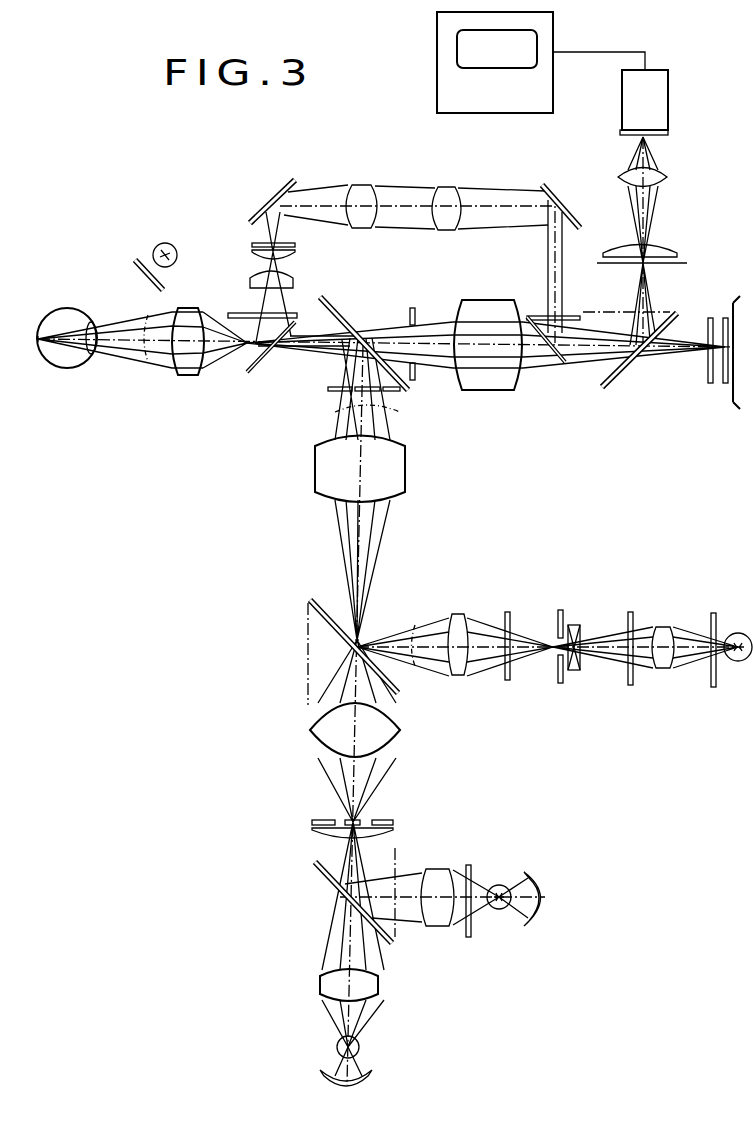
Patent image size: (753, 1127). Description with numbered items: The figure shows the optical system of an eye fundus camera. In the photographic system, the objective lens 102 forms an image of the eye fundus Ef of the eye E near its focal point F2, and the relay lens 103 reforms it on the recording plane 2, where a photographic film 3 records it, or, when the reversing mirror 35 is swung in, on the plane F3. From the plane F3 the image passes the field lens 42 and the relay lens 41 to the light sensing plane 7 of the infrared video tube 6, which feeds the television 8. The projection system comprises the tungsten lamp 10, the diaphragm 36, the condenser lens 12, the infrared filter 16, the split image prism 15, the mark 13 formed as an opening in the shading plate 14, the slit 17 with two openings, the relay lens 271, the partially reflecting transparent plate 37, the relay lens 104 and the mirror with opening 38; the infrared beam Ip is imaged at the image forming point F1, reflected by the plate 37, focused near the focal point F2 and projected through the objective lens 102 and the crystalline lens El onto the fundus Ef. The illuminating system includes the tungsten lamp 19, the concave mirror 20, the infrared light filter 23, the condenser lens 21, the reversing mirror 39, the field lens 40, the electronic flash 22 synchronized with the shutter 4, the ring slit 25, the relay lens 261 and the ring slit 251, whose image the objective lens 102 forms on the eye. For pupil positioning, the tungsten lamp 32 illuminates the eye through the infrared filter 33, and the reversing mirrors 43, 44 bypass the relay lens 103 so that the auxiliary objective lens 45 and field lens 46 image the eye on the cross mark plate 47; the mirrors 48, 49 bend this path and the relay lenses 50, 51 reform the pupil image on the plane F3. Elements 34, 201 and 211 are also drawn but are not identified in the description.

The recording plane 2 is at (733, 400).
The photographic film 3 is at (723, 378).
The shutter 4 is at (708, 370).
The infrared-light video tube 6 is at (668, 100).
The light sensing plane 7 is at (668, 135).
The television 8 is at (553, 36).
The tungsten lamp 10 is at (738, 661).
The condenser lens 12 is at (663, 668).
The mark 13 is at (553, 650).
The shading plate 14 is at (560, 610).
The split image prism 15 is at (574, 670).
The infrared filter 16 is at (630, 685).
The slit with two openings 17 is at (507, 680).
The tungsten lamp 19 is at (499, 909).
The concave mirror 20 is at (529, 921).
The condenser lens 21 is at (438, 926).
The electronic flash 22 is at (337, 1047).
The infrared light filter 23 is at (468, 937).
The ring slit 25 is at (384, 820).
The tungsten lamp 32 is at (165, 243).
The infrared filter 33 is at (135, 260).
The aperture plate 34 is at (412, 308).
The reversing mirror 35 is at (620, 375).
The diaphragm 36 is at (713, 687).
The partially reflecting transparent plate 37 is at (398, 693).
The mirror with opening 38 is at (335, 305).
The reversing mirror 39 is at (325, 878).
The field lens 40 is at (393, 829).
The relay lens 41 is at (667, 177).
The field lens 42 is at (660, 245).
The reversing mirror 43 is at (240, 312).
The reversing mirror 44 is at (530, 316).
The auxiliary objective lens 45 is at (293, 280).
The field lens 46 is at (252, 255).
The transparent plate 47 is at (252, 245).
The mirror 48 is at (275, 195).
The mirror 49 is at (563, 190).
The relay lens 50 is at (362, 183).
The relay lens 51 is at (447, 185).
The objective lens 102 is at (190, 375).
The relay lens 103 is at (487, 390).
The relay lens 104 is at (405, 470).
The concave mirror 201 is at (372, 1072).
The lens 211 is at (320, 985).
The ring slit 251 is at (328, 389).
The relay lens 261 is at (310, 730).
The relay lens 271 is at (458, 675).
The eye to be inspected E is at (67, 308).
The eye fundus Ef is at (38, 342).
The crystalline lens El is at (92, 354).
The infrared light beam Ip is at (147, 362).
The image forming point F1 is at (359, 640).
The focal point F2 is at (247, 345).
The plane F3 is at (687, 263).